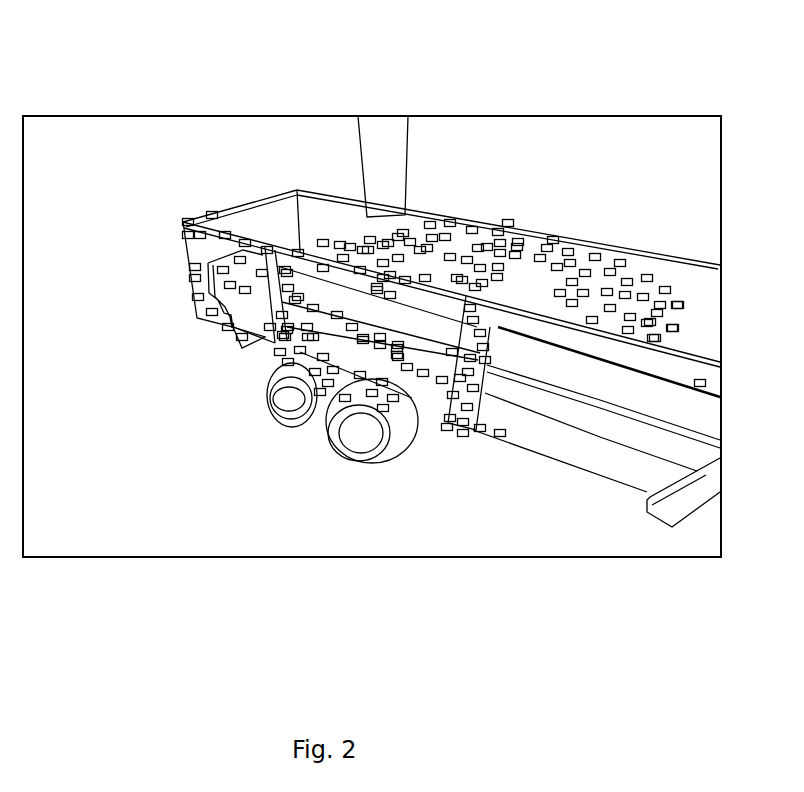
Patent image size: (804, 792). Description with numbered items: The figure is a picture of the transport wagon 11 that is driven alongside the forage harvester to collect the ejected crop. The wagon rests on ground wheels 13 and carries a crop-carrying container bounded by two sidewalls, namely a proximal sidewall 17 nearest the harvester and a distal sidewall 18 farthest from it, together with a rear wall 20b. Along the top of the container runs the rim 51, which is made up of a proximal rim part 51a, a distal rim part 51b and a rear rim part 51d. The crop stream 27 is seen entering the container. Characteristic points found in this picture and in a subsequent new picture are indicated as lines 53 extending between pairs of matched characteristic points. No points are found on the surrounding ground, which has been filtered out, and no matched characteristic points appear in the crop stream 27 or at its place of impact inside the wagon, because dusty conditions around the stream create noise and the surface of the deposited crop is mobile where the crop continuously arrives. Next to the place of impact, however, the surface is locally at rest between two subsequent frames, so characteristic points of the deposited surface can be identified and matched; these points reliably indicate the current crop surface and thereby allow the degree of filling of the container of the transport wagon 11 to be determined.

The transport wagon 11 is at (563, 452).
The ground wheels 13 is at (352, 437).
The proximal sidewall 17 is at (533, 437).
The distal sidewall 18 is at (696, 263).
The rear wall 20b is at (238, 218).
The crop stream 27 is at (365, 167).
The rim 51 is at (616, 240).
The proximal rim part 51a is at (667, 345).
The distal rim part 51b is at (549, 232).
The rear rim part 51d is at (262, 200).
The lines 53 is at (678, 328).